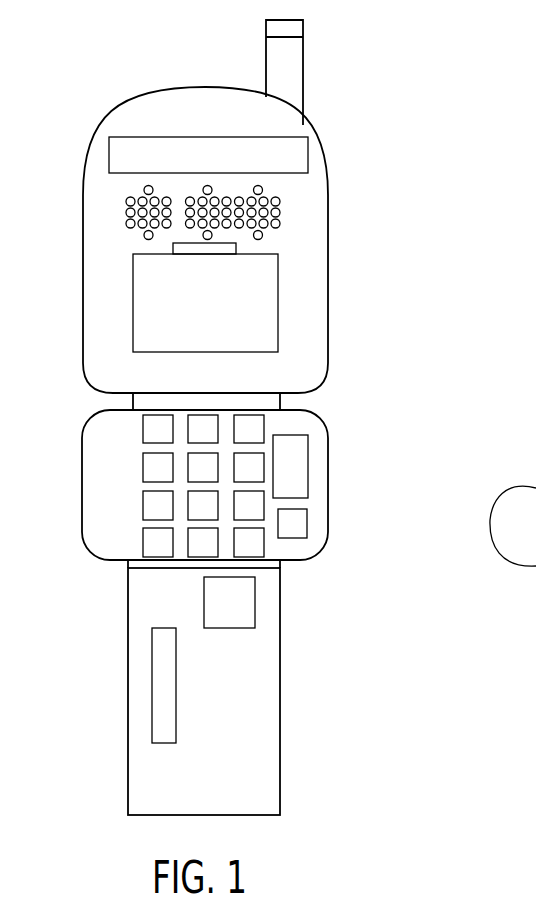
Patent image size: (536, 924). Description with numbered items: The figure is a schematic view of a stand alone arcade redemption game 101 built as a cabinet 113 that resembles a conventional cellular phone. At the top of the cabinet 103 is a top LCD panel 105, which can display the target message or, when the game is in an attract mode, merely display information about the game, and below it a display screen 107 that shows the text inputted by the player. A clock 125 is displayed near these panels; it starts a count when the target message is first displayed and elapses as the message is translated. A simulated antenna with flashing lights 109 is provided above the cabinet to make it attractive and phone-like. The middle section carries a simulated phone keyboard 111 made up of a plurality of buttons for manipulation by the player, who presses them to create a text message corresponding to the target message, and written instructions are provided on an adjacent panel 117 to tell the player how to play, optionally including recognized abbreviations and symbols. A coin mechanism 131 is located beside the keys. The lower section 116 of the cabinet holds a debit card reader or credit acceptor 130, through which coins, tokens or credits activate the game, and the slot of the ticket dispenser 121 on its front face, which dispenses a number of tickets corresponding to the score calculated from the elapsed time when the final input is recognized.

The gaming device 101 is at (318, 806).
The top of the cabinet 103 is at (362, 292).
The top LCD panel 105 is at (308, 155).
The display panel 107 is at (278, 313).
The flashing LEDs 109 is at (326, 66).
The simulated phone keyboard 111 is at (264, 428).
The cabinet 113 is at (83, 538).
The base housing 116 is at (280, 712).
The instructions panel 117 is at (308, 447).
The ticket dispenser slot 121 is at (152, 678).
The clock 125 is at (237, 250).
The credit acceptor 130 is at (255, 603).
The coin mechanism 131 is at (307, 531).